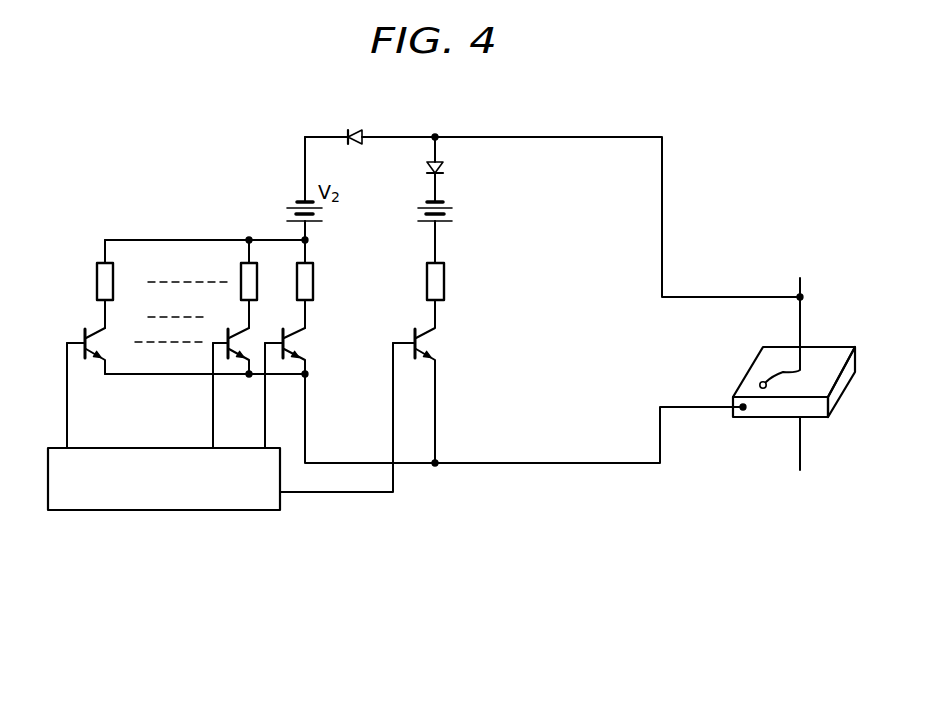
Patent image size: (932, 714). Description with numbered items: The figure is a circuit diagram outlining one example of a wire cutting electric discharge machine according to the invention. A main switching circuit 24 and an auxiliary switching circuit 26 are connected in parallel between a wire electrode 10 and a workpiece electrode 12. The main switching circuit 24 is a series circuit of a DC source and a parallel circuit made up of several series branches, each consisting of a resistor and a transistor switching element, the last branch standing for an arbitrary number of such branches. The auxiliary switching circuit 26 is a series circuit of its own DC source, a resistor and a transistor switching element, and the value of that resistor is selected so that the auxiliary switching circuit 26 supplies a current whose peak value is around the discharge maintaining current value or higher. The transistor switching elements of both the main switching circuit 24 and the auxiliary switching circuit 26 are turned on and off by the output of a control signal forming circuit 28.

The wire electrode 10 is at (802, 284).
The workpiece electrode 12 is at (857, 360).
The main switching circuit 24 is at (229, 227).
The auxiliary switching circuit 26 is at (463, 250).
The control signal forming circuit 28 is at (212, 510).